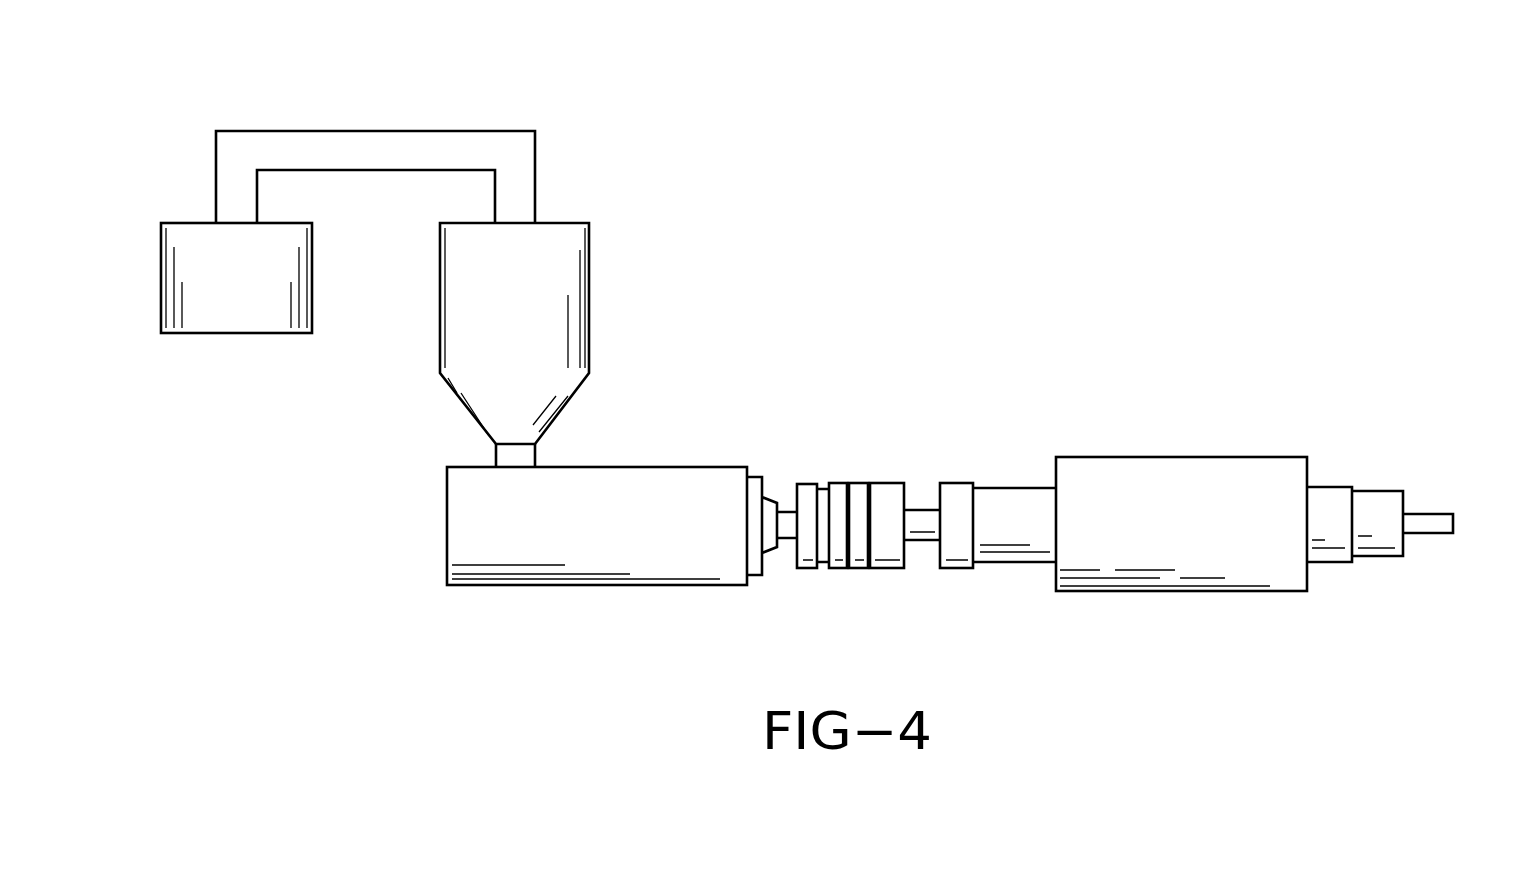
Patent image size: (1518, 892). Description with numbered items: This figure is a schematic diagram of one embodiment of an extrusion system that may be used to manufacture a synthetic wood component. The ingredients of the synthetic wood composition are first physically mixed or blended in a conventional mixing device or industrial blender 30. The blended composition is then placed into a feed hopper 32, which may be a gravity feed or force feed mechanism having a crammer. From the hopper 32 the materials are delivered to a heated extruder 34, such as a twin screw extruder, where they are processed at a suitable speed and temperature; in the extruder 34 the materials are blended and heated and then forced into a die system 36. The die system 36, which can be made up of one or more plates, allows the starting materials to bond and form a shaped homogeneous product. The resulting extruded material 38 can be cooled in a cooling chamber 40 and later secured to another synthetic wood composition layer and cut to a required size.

The industrial blender 30 is at (256, 294).
The feed hopper 32 is at (496, 315).
The heated extruder 34 is at (578, 543).
The die system 36 is at (792, 465).
The extruded material 38 is at (1420, 534).
The cooling chamber 40 is at (1162, 540).